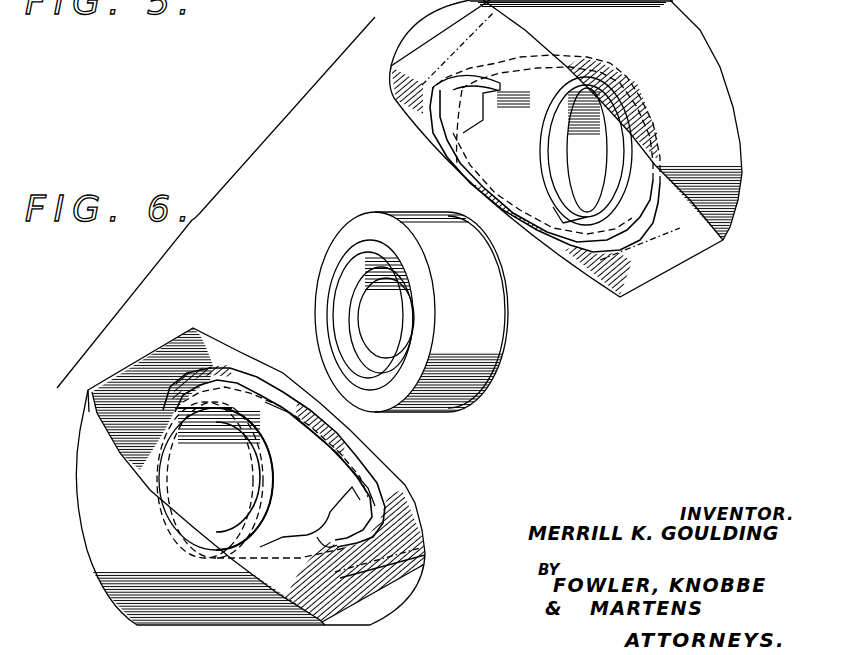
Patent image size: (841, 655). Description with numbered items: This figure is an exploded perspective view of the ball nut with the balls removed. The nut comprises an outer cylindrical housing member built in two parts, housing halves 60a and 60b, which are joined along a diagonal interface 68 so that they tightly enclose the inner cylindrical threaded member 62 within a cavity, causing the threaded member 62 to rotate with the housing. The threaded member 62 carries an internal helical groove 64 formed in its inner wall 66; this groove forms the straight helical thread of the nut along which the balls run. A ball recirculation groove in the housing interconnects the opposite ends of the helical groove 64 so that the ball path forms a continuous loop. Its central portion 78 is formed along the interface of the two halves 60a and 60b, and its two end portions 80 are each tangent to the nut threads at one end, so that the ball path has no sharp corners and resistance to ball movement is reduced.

The housing member half 60a is at (693, 32).
The housing member half 60b is at (84, 461).
The inner cylindrical threaded member 62 is at (487, 347).
The internal helical groove 64 is at (352, 278).
The inner wall 66 is at (358, 298).
The diagonal interface 68 is at (400, 96).
The central portion 78 is at (480, 177).
The end portions 80 is at (474, 77).